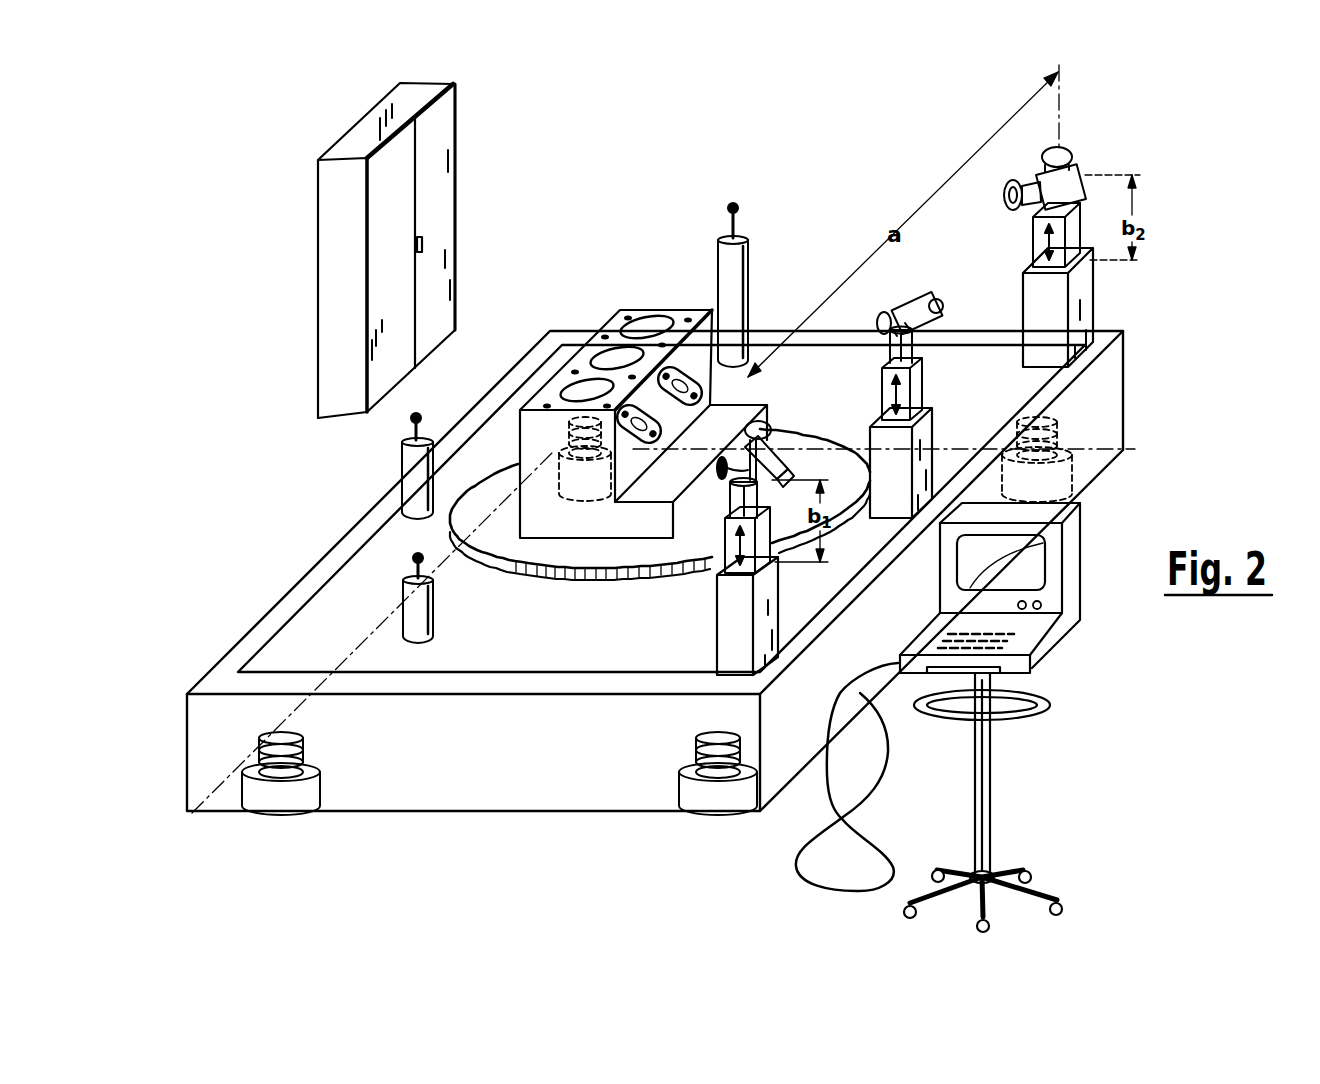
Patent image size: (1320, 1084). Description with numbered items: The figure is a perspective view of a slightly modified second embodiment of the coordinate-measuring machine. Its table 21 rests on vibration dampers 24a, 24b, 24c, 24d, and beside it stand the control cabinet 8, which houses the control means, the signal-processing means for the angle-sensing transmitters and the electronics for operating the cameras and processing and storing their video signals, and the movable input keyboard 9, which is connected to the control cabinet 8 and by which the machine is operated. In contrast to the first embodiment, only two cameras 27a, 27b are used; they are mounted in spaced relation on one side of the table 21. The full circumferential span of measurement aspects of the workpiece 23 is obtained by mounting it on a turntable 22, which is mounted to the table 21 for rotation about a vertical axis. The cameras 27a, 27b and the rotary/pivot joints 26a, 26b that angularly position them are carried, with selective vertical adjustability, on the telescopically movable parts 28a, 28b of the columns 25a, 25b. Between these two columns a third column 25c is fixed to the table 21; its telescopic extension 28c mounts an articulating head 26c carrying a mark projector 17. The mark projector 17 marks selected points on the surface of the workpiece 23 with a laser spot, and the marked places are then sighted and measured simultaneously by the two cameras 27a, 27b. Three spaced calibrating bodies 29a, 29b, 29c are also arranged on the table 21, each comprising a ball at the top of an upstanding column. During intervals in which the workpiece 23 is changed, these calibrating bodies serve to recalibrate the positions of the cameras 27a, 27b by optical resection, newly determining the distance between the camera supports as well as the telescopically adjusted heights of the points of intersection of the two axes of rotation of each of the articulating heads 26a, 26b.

The control cabinet 8 is at (457, 186).
The input keyboard 9 is at (1053, 632).
The mark projector 17 is at (913, 297).
The table 21 is at (490, 787).
The turntable 22 is at (510, 573).
The workpiece 23 is at (520, 515).
The vibration damper 24a is at (287, 813).
The vibration damper 24b is at (712, 812).
The vibration damper 24c is at (1075, 475).
The vibration damper 24d is at (558, 457).
The column 25a is at (730, 620).
The column 25b is at (1085, 290).
The third column 25c is at (870, 438).
The rotary/pivot joint 26a is at (728, 480).
The rotary/pivot joint 26b is at (1067, 157).
The articulating head 26c is at (912, 342).
The camera 27a is at (773, 438).
The camera 27b is at (1083, 168).
The telescopically movable part 28a is at (728, 568).
The telescopically movable part 28b is at (1033, 232).
The telescopic extension 28c is at (920, 390).
The calibrating body 29a is at (402, 450).
The calibrating body 29b is at (738, 270).
The calibrating body 29c is at (403, 585).